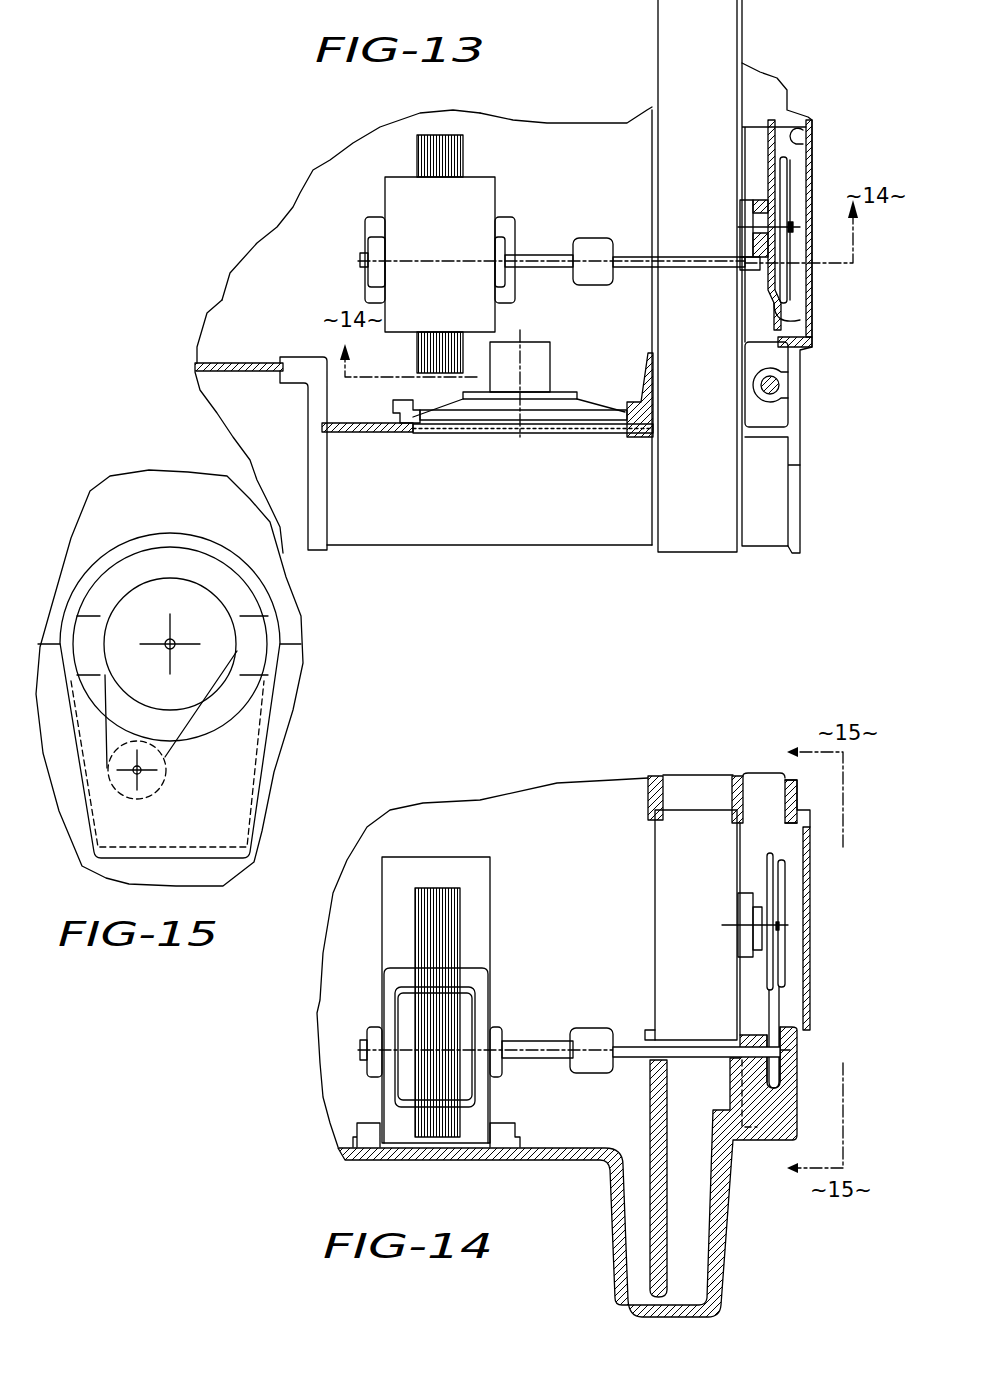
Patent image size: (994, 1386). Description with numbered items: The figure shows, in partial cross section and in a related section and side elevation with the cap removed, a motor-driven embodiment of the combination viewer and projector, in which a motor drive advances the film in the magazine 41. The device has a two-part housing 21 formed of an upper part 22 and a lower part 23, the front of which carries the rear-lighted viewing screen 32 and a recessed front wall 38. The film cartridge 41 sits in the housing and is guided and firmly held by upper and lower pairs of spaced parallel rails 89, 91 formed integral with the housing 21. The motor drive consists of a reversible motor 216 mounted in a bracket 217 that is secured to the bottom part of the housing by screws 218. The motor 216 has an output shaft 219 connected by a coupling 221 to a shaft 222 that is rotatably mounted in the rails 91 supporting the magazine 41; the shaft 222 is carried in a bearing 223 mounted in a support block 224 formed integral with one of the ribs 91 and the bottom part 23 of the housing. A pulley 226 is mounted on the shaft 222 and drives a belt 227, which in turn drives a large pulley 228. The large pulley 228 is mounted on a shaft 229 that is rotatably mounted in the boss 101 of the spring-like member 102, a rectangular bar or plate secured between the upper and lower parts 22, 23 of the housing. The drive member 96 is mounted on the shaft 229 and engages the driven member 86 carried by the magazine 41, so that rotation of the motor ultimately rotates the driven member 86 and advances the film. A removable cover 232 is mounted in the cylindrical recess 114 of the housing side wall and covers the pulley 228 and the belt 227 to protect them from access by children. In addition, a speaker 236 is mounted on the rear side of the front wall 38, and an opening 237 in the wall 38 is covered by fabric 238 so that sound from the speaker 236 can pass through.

In FIG. 13, the housing 21 is at (593, 93).
In FIG. 14, the upper part of housing 22 is at (577, 755).
In FIG. 13, the lower part of housing 23 is at (292, 200).
In FIG. 15, the lower part of housing 23 is at (296, 603).
In FIG. 14, the lower part of housing 23 is at (346, 1163).
In FIG. 13, the viewing screen 32 is at (240, 372).
In FIG. 13, the front wall 38 is at (347, 433).
In FIG. 13, the film cartridge 41 is at (646, 486).
In FIG. 14, the film cartridge 41 is at (645, 863).
In FIG. 13, the driven member 86 is at (740, 238).
In FIG. 14, the driven member 86 is at (738, 933).
In FIG. 14, the upper rails 89 is at (648, 787).
In FIG. 14, the lower rails 91 is at (652, 1117).
In FIG. 13, the drive member 96 is at (745, 277).
In FIG. 13, the boss 101 is at (760, 203).
In FIG. 13, the spring-like member 102 is at (768, 160).
In FIG. 14, the spring-like member 102 is at (757, 893).
In FIG. 13, the cylindrical recess 114 is at (807, 137).
In FIG. 14, the cylindrical recess 114 is at (787, 830).
In FIG. 13, the reversible motor 216 is at (386, 190).
In FIG. 14, the reversible motor 216 is at (470, 857).
In FIG. 13, the bracket 217 is at (365, 225).
In FIG. 14, the bracket 217 is at (484, 993).
In FIG. 14, the screws 218 is at (373, 1125).
In FIG. 13, the output shaft 219 is at (533, 255).
In FIG. 14, the output shaft 219 is at (538, 1042).
In FIG. 13, the coupling 221 is at (600, 238).
In FIG. 14, the coupling 221 is at (592, 1030).
In FIG. 13, the shaft 222 is at (633, 268).
In FIG. 15, the shaft 222 is at (141, 770).
In FIG. 14, the shaft 222 is at (630, 1060).
In FIG. 14, the bearing 223 is at (743, 1073).
In FIG. 14, the support block 224 is at (760, 1108).
In FIG. 15, the pulley 226 is at (129, 795).
In FIG. 14, the pulley 226 is at (787, 1022).
In FIG. 13, the belt 227 is at (812, 323).
In FIG. 15, the belt 227 is at (200, 730).
In FIG. 14, the belt 227 is at (810, 992).
In FIG. 13, the large pulley 228 is at (790, 180).
In FIG. 15, the large pulley 228 is at (168, 562).
In FIG. 14, the large pulley 228 is at (787, 892).
In FIG. 13, the shaft 229 is at (740, 220).
In FIG. 15, the shaft 229 is at (168, 642).
In FIG. 14, the shaft 229 is at (783, 927).
In FIG. 13, the removable cover 232 is at (813, 293).
In FIG. 14, the removable cover 232 is at (810, 933).
In FIG. 13, the speaker 236 is at (545, 358).
In FIG. 13, the opening 237 is at (425, 427).
In FIG. 13, the fabric 238 is at (510, 433).